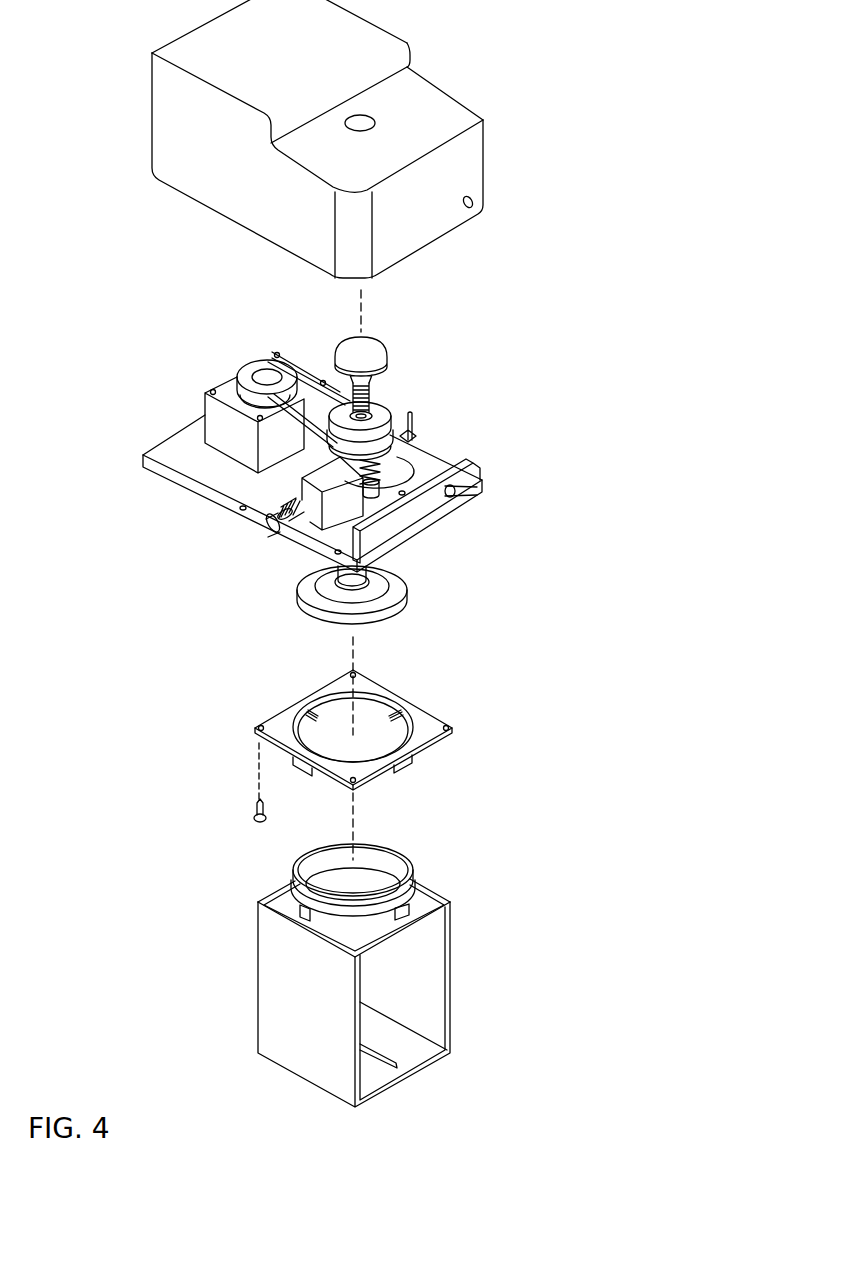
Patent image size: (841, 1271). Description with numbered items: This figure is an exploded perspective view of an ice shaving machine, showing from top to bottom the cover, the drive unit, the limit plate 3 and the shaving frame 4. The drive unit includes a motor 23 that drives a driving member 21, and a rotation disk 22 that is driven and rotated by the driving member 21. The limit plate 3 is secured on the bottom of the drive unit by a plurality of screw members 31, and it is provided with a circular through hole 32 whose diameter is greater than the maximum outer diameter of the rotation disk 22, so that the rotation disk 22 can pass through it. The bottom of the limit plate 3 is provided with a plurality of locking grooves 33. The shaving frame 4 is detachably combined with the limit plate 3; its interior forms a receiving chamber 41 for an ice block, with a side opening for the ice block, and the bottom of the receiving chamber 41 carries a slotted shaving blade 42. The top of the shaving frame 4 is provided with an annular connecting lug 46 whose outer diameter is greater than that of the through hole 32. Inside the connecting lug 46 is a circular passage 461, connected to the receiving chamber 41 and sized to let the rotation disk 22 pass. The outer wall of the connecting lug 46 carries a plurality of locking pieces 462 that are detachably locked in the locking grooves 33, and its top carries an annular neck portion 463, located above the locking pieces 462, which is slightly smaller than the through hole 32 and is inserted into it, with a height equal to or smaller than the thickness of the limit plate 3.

The driving member 21 is at (380, 417).
The rotation disk 22 is at (397, 590).
The motor 23 is at (222, 440).
The limit plate 3 is at (417, 713).
The screw members 31 is at (255, 812).
The through hole 32 is at (370, 710).
The locking grooves 33 is at (305, 770).
The shaving frame 4 is at (268, 1005).
The receiving chamber 41 is at (430, 970).
The slotted shaving blade 42 is at (380, 1063).
The connecting lug 46 is at (290, 893).
The passage 461 is at (380, 880).
The locking pieces 462 is at (410, 908).
The neck portion 463 is at (410, 892).